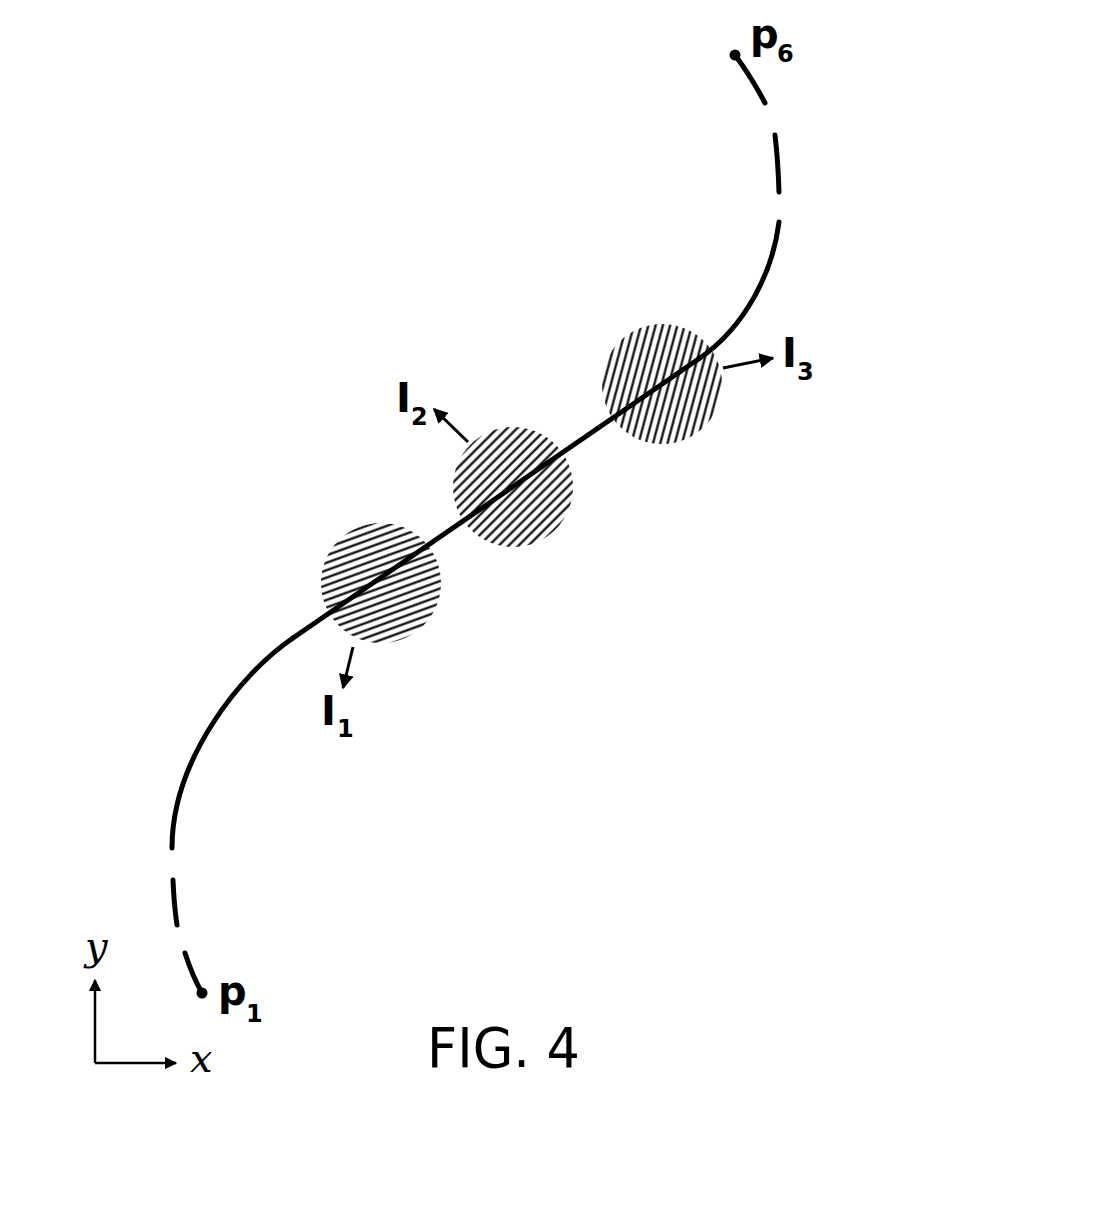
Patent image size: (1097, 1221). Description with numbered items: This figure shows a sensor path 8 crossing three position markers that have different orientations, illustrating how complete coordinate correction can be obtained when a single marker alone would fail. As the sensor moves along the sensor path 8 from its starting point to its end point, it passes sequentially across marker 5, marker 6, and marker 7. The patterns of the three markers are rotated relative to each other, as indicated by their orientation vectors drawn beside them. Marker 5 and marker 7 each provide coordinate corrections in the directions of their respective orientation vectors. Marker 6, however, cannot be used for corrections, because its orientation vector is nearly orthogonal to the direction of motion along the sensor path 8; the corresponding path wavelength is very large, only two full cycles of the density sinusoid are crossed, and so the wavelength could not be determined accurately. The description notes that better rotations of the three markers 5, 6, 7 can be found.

The marker 5 is at (338, 540).
The marker 6 is at (552, 533).
The marker 7 is at (627, 338).
The sensor path 8 is at (197, 757).